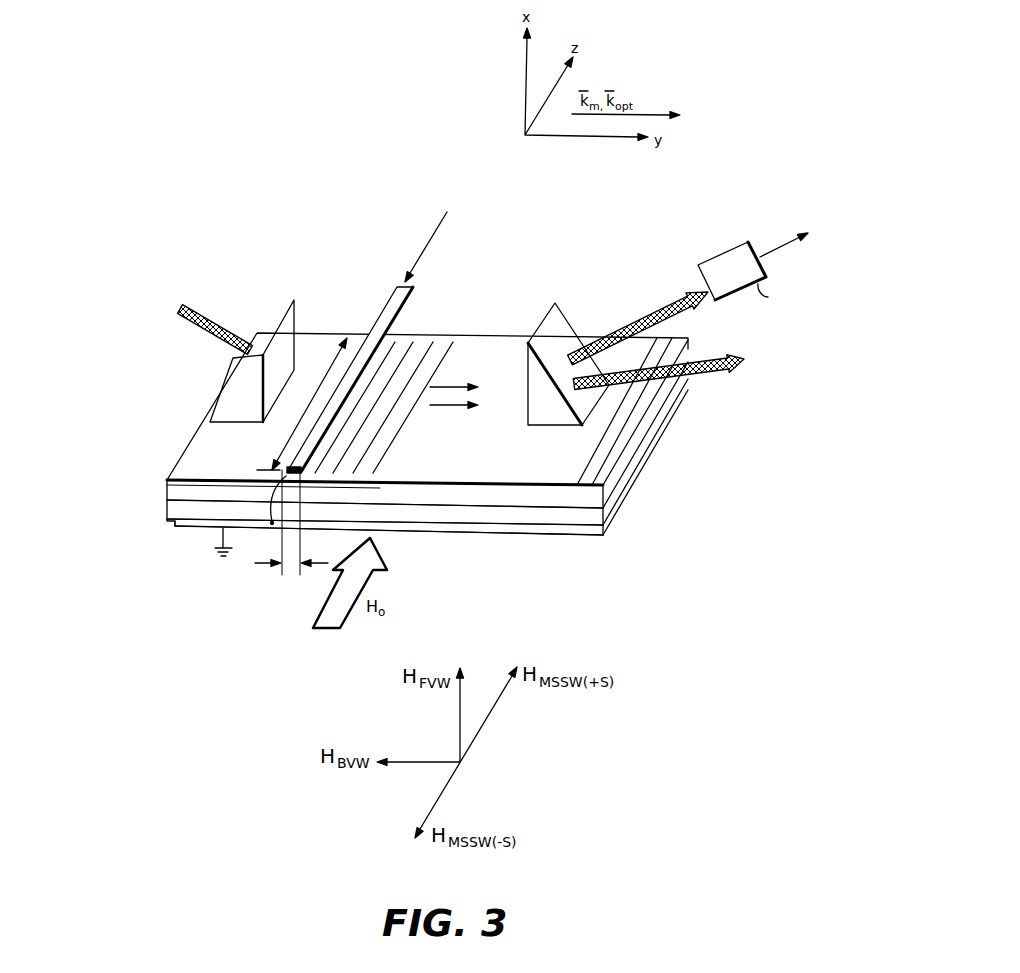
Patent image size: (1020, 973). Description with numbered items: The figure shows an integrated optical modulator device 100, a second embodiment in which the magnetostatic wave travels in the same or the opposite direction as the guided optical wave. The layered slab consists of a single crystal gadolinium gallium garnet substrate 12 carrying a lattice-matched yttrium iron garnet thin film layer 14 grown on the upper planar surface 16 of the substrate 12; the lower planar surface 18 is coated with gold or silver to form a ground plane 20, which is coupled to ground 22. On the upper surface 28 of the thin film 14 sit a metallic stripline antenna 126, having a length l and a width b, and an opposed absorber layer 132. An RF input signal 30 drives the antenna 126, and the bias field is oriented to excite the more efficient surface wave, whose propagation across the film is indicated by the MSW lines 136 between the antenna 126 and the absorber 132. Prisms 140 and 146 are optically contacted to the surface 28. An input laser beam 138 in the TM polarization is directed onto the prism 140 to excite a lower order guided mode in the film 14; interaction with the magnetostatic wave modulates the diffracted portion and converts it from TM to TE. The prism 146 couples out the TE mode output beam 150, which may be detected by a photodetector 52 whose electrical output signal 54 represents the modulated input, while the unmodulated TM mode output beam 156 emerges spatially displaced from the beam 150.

The substrate 12 is at (167, 513).
The thin film layer 14 is at (167, 486).
The upper planar surface 16 is at (167, 503).
The lower planar surface 18 is at (180, 527).
The ground plane 20 is at (193, 529).
The ground 22 is at (222, 560).
The upper surface 28 is at (228, 465).
The RF input signal 30 is at (463, 235).
The photodetector 52 is at (740, 286).
The electrical output signal 54 is at (782, 252).
The integrated optical modulator device 100 is at (688, 541).
The metallic stripline antenna 126 is at (383, 307).
The absorber layer 132 is at (590, 462).
The magnetostatic waves 136 is at (462, 330).
The input laser beam 138 is at (200, 308).
The prism 140 is at (300, 308).
The prism 146 is at (560, 316).
The TE mode output beam 150 is at (680, 318).
The TM mode output beam 156 is at (708, 373).